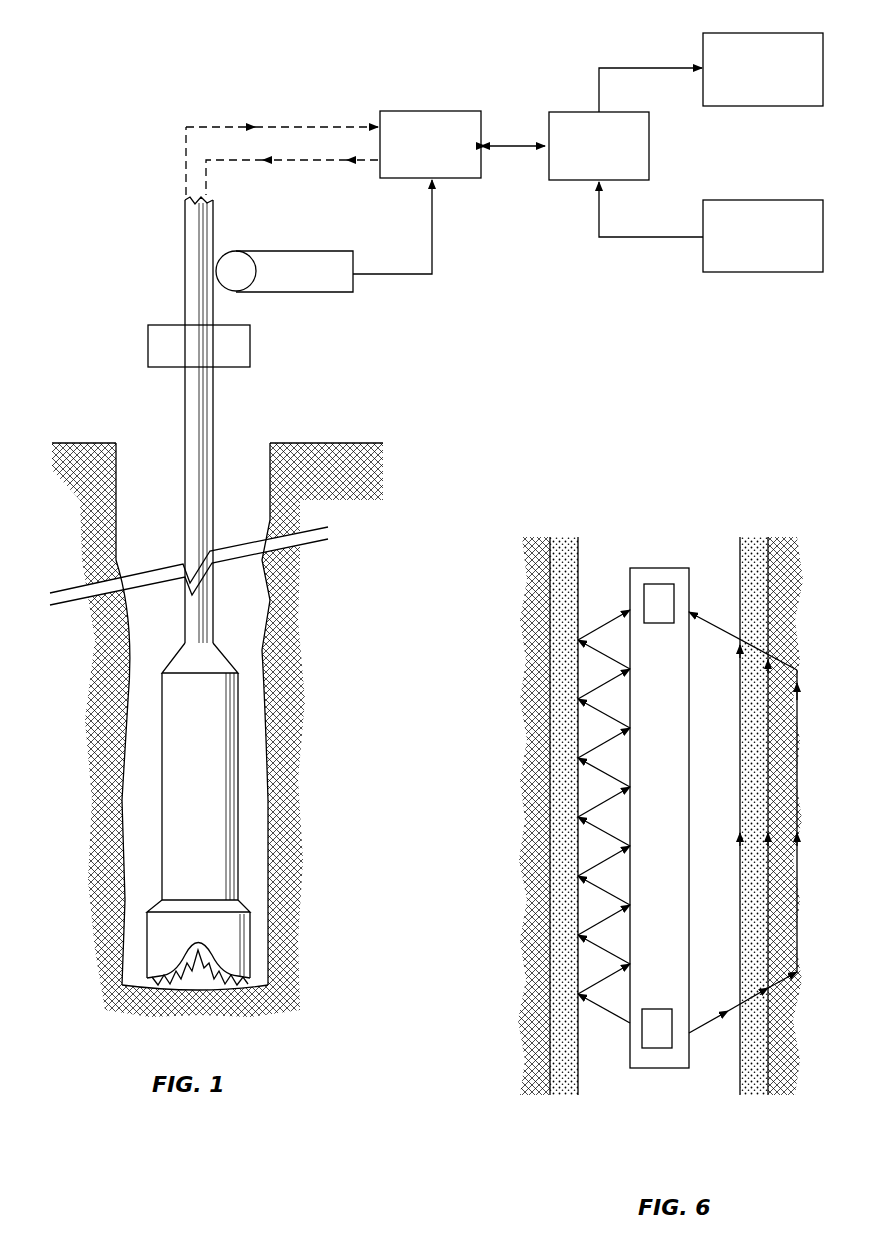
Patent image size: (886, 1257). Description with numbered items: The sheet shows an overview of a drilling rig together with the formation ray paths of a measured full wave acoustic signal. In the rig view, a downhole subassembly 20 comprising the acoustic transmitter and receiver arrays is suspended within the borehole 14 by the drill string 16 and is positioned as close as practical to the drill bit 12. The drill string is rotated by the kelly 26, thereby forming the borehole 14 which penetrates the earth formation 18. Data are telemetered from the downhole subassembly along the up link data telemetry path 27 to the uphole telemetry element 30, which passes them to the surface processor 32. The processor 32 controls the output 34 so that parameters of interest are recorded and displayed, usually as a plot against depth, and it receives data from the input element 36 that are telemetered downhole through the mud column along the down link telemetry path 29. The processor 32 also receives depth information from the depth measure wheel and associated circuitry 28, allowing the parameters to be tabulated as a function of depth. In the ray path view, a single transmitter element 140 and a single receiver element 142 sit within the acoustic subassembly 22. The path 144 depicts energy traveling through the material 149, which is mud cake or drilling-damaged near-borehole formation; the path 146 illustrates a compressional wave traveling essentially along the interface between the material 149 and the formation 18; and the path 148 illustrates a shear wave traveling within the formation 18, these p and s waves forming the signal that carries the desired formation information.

In FIG. 1, the drill bit 12 is at (160, 942).
In FIG. 1, the borehole 14 is at (118, 500).
In FIG. 6, the borehole 14 is at (740, 537).
In FIG. 1, the drill string 16 is at (215, 413).
In FIG. 1, the earth formation 18 is at (82, 693).
In FIG. 6, the earth formation 18 is at (532, 1093).
In FIG. 1, the downhole subassembly 20 is at (186, 862).
In FIG. 6, the acoustic subassembly 22 is at (645, 772).
In FIG. 1, the kelly 26 is at (186, 358).
In FIG. 1, the up link data telemetry path 27 is at (283, 126).
In FIG. 1, the depth measure wheel and associated circuitry 28 is at (284, 283).
In FIG. 1, the down link telemetry path 29 is at (277, 161).
In FIG. 1, the uphole telemetry element 30 is at (457, 111).
In FIG. 1, the surface processor 32 is at (649, 150).
In FIG. 1, the output 34 is at (765, 33).
In FIG. 1, the input element 36 is at (783, 200).
In FIG. 6, the transmitter element 140 is at (643, 1047).
In FIG. 6, the receiver element 142 is at (660, 585).
In FIG. 6, the path 144 is at (742, 703).
In FIG. 6, the path 146 is at (767, 903).
In FIG. 6, the path 148 is at (797, 790).
In FIG. 6, the material 149 is at (562, 1097).